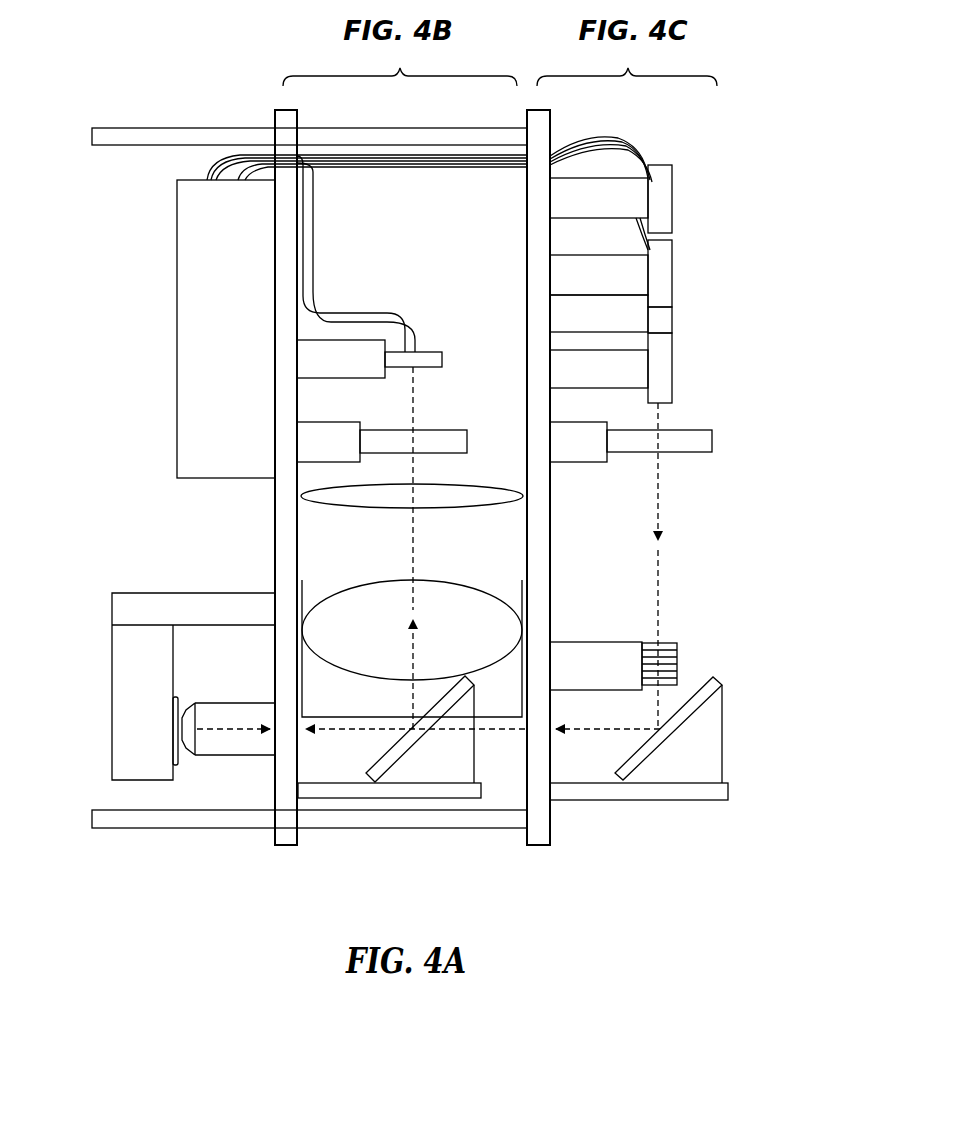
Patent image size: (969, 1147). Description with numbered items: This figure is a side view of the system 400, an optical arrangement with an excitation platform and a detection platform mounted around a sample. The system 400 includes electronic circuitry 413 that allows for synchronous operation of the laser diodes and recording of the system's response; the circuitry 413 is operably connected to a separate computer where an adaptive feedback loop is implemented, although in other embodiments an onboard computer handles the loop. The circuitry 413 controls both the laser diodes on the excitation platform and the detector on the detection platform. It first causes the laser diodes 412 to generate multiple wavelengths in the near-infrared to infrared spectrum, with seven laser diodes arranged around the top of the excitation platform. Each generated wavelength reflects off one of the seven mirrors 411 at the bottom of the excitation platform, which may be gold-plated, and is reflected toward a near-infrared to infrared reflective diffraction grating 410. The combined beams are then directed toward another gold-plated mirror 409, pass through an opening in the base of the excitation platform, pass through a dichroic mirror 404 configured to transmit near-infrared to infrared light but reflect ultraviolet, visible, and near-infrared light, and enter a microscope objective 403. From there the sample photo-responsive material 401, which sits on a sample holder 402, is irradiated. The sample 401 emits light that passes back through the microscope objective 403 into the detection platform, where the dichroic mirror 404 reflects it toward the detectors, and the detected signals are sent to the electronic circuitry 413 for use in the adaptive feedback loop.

The system 400 is at (188, 95).
The sample photo-responsive material 401 is at (176, 765).
The sample holder 402 is at (112, 730).
The microscope objective 403 is at (237, 755).
The dichroic mirror 404 is at (403, 748).
The gold-plated mirror 409 is at (650, 750).
The NIR-IR reflective diffraction grating 410 is at (712, 438).
The mirrors 411 is at (677, 652).
The laser diodes 412 is at (673, 370).
The electronic circuitry 413 is at (177, 328).